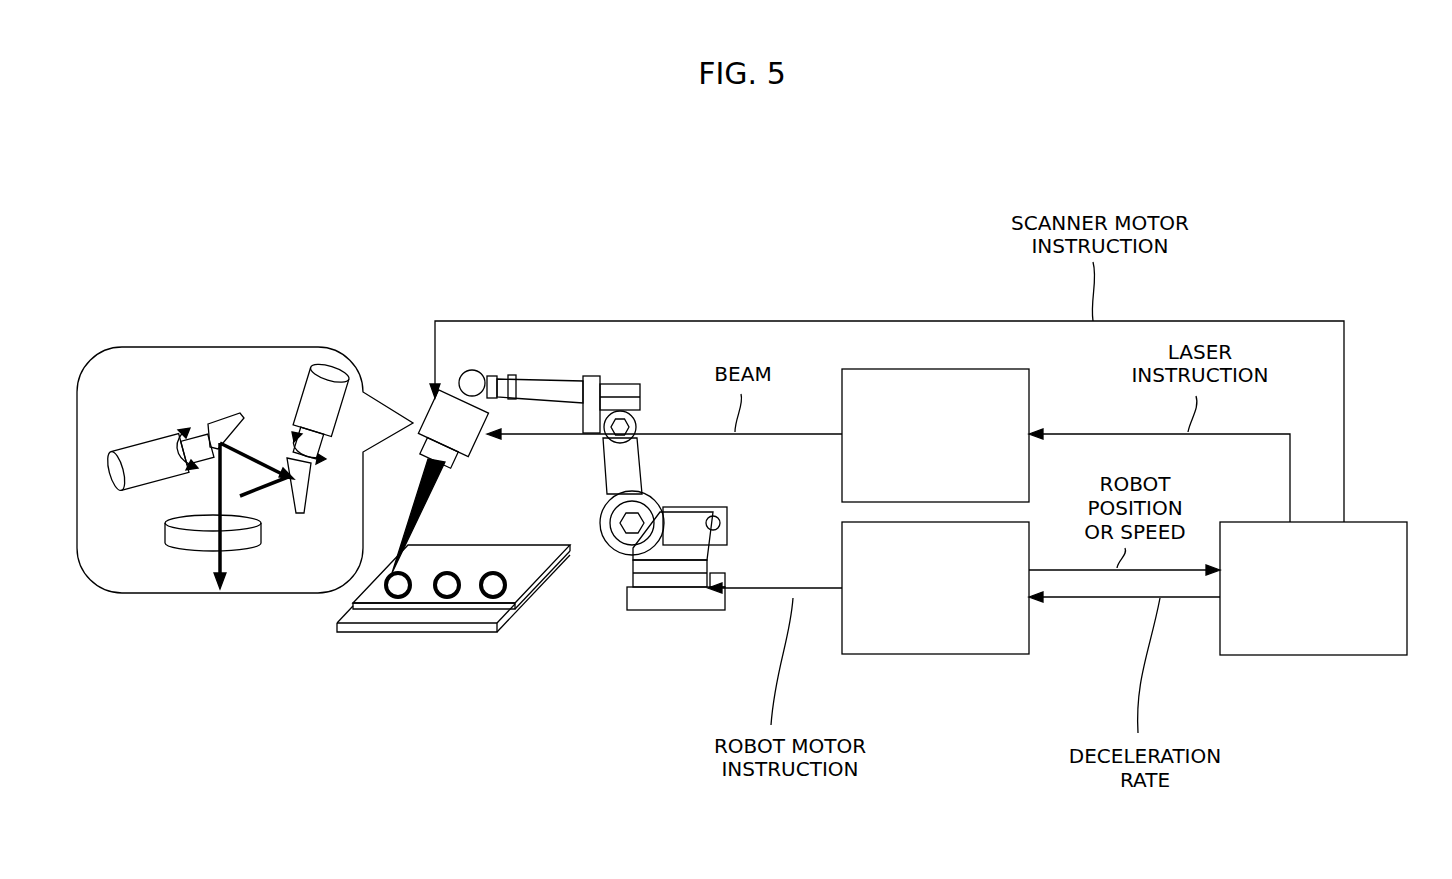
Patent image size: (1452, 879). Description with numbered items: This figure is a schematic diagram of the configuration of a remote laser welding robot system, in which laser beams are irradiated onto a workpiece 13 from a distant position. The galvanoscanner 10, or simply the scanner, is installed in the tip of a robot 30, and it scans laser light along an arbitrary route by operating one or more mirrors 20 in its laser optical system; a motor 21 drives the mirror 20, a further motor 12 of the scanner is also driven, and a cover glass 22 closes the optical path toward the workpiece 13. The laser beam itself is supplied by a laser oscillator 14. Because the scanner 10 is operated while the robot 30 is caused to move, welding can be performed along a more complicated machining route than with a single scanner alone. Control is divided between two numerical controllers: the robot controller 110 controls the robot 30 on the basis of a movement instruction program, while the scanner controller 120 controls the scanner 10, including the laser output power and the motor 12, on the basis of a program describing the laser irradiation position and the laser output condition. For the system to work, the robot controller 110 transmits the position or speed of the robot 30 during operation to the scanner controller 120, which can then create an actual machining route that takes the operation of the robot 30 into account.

The galvanoscanner 10 is at (450, 397).
The motor 12 is at (333, 376).
The workpiece 13 is at (416, 612).
The laser oscillator 14 is at (955, 369).
The mirror 20 is at (222, 432).
The motor for driving the mirror 21 is at (145, 462).
The cover glass 22 is at (192, 550).
The robot 30 is at (672, 612).
The robot controller 110 is at (953, 654).
The scanner controller 120 is at (1316, 655).